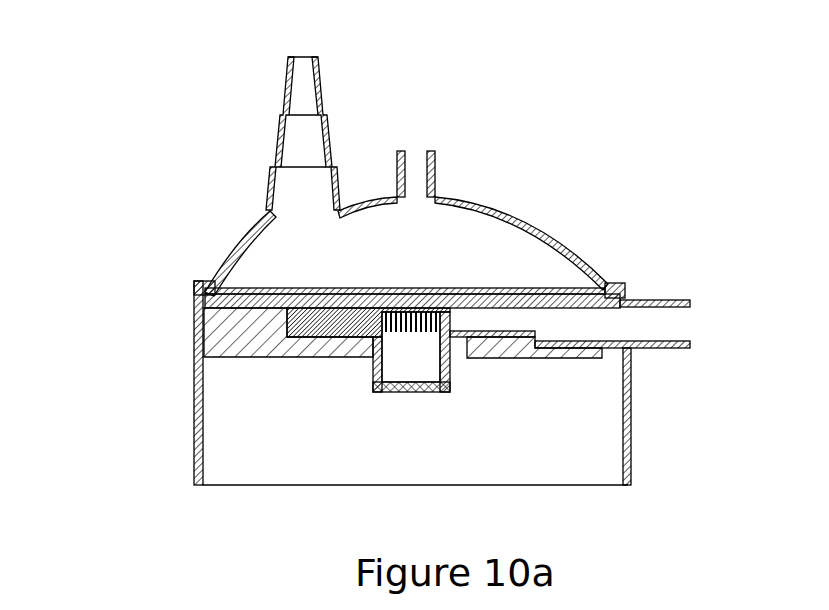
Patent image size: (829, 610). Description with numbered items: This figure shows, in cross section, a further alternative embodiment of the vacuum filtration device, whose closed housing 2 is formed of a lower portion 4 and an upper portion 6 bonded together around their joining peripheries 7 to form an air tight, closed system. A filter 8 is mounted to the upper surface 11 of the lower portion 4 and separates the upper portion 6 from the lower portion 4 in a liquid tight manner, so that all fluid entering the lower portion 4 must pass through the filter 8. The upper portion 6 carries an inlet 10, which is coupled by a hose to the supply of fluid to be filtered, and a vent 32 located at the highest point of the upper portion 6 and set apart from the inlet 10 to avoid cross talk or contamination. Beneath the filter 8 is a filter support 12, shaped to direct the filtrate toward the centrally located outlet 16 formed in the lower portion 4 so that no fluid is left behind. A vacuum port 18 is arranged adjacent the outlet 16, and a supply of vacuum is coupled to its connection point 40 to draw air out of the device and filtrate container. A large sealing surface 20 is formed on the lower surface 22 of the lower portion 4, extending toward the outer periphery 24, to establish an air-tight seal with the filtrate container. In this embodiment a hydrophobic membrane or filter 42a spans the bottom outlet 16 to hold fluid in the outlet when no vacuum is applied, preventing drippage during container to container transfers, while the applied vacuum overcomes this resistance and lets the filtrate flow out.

The closed housing 2 is at (190, 288).
The lower portion 4 is at (148, 438).
The upper portion 6 is at (538, 218).
The joining peripheries 7 is at (210, 292).
The filter 8 is at (513, 290).
The inlet 10 is at (320, 90).
The upper surface 11 is at (592, 312).
The filter support 12 is at (432, 340).
The outlet 16 is at (395, 390).
The vacuum port 18 is at (460, 323).
The sealing surface 20 is at (248, 353).
The lower surface 22 is at (600, 358).
The outer periphery 24 is at (626, 487).
The vent 32 is at (414, 170).
The connection point 40 is at (662, 350).
The hydrophobic membrane or filter 42a is at (413, 360).